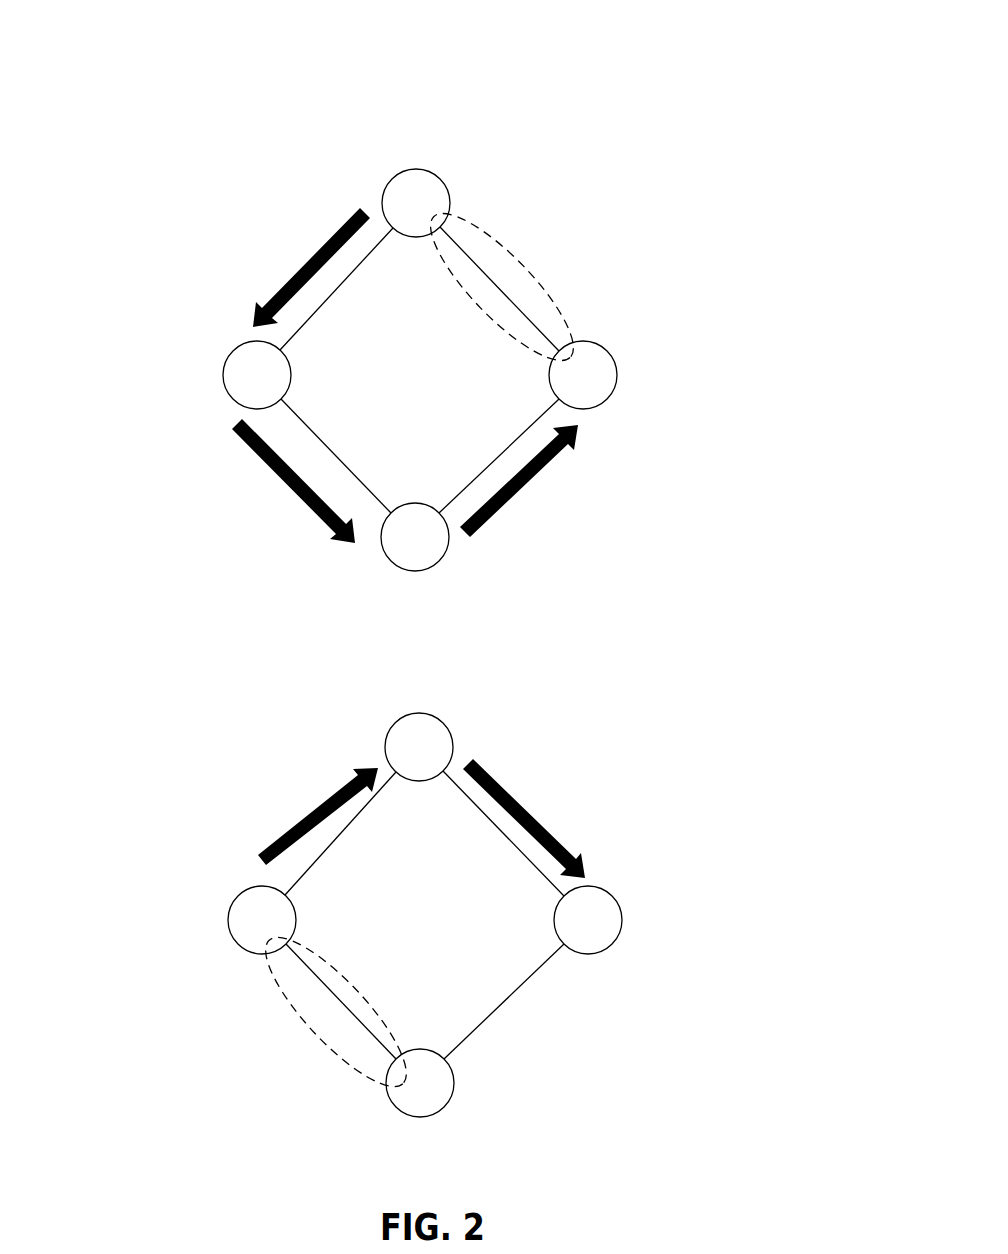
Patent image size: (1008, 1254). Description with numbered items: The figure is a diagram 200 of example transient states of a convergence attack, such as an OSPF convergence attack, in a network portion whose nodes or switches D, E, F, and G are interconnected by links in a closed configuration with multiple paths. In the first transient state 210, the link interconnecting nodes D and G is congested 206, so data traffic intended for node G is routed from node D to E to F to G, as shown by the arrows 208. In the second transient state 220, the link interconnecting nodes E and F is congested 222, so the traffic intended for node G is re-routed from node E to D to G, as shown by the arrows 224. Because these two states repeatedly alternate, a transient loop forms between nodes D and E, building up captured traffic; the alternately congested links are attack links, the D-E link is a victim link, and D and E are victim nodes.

The diagram 200 is at (690, 96).
The congested link 206 is at (525, 250).
The arrows 208 is at (253, 270).
The first transient state 210 is at (342, 153).
The second transient state 220 is at (340, 687).
The congested link 222 is at (265, 1032).
The arrows 224 is at (301, 801).